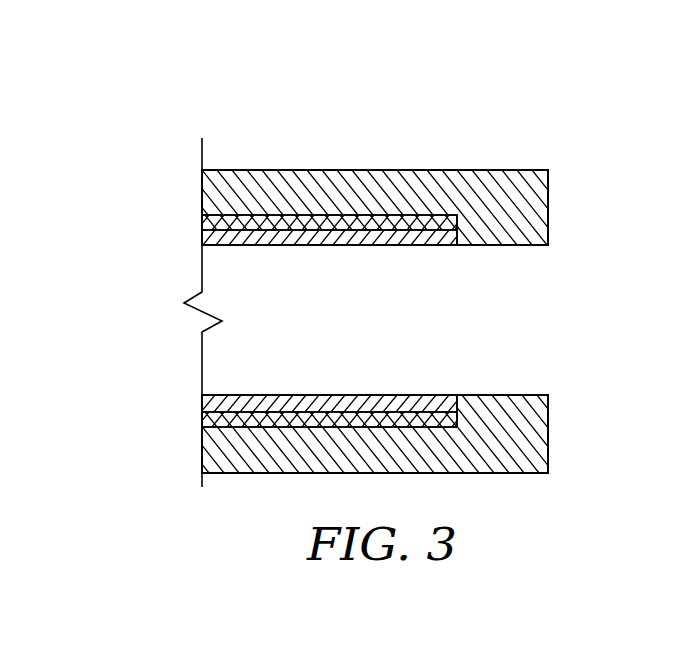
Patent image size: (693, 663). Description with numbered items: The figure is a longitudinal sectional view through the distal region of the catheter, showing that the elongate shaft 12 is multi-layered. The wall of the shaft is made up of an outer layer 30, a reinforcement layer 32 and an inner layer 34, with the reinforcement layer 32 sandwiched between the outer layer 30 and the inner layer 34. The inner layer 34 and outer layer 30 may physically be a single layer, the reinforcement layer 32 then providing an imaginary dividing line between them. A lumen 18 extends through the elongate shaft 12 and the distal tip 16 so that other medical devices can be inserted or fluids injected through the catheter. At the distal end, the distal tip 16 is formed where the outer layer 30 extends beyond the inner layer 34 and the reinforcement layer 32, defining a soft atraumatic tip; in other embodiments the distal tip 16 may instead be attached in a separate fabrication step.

The elongate shaft 12 is at (235, 133).
The distal tip 16 is at (515, 133).
The lumen 18 is at (480, 332).
The outer layer 30 is at (325, 197).
The reinforcement layer 32 is at (370, 220).
The inner layer 34 is at (428, 238).